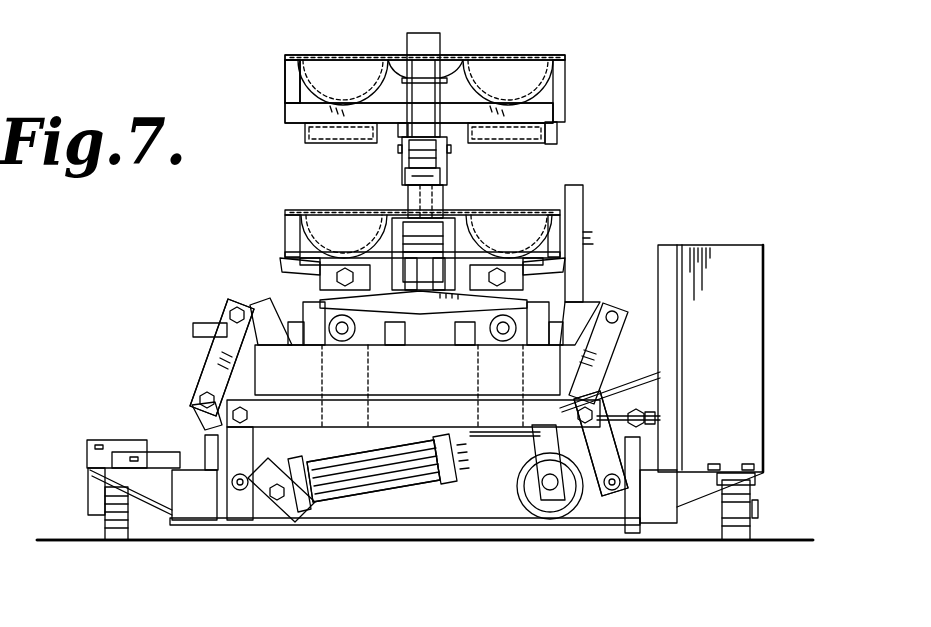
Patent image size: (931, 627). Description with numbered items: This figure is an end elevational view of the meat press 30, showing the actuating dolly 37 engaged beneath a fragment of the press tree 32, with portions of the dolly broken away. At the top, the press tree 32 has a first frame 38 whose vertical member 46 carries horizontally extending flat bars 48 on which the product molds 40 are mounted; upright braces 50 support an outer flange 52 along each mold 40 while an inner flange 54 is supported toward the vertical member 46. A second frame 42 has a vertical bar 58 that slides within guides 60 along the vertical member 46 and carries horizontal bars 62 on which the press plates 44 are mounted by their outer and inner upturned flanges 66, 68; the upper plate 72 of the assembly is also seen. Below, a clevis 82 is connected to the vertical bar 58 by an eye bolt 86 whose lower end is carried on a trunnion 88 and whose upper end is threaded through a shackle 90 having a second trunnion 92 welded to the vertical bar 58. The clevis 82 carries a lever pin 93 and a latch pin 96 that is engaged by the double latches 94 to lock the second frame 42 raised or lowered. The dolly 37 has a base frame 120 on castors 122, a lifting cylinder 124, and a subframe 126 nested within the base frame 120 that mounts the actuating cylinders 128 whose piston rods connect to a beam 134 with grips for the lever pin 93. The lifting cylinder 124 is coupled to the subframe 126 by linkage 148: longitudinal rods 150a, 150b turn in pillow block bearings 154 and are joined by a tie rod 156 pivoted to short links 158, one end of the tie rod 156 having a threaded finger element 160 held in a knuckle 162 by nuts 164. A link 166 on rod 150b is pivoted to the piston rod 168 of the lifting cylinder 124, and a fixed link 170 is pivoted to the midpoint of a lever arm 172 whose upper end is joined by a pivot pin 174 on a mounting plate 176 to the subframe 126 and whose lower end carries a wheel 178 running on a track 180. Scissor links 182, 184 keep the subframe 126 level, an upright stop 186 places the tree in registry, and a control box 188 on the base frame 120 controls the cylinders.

The meat press 30 is at (678, 122).
The press tree 32 is at (572, 60).
The actuating dolly 37 is at (148, 324).
The first frame 38 is at (440, 45).
The product mold 40 is at (480, 88).
The second frame 42 is at (424, 32).
The press plate 44 is at (303, 143).
The vertical member 46 is at (407, 45).
The flat bar 48 is at (285, 113).
The upright brace 50 is at (287, 82).
The outer flange 52 is at (287, 55).
The inner flange 54 is at (396, 56).
The vertical bar 58 is at (440, 56).
The guide 60 is at (378, 88).
The horizontal bar 62 is at (545, 113).
The outer upturned flange 66 is at (306, 133).
The inner upturned flange 68 is at (380, 135).
The top plate 72 is at (519, 56).
The clevis 82 is at (372, 240).
The eye bolt 86 is at (410, 194).
The trunnion 88 is at (443, 218).
The shackle 90 is at (447, 175).
The second trunnion 92 is at (447, 150).
The lever pin 93 is at (425, 318).
The double latch 94 is at (478, 240).
The latch pin 96 is at (523, 300).
The base frame 120 is at (190, 462).
The castor 122 is at (105, 533).
The lifting cylinder 124 is at (400, 494).
The subframe 126 is at (397, 386).
The actuating cylinder 128 is at (320, 348).
The beam 134 is at (332, 300).
The linkage 148 is at (204, 362).
The longitudinal rod 150a is at (257, 524).
The longitudinal rod 150b is at (612, 522).
The pillow block bearing 154 is at (227, 522).
The tie rod 156 is at (400, 440).
The short link 158 is at (690, 440).
The finger element 160 is at (588, 406).
The knuckle 162 is at (656, 420).
The nut 164 is at (656, 408).
The link 166 is at (660, 376).
The piston rod 168 is at (610, 386).
The fixed link 170 is at (612, 418).
The lever arm 172 is at (620, 318).
The pivot pin 174 is at (602, 305).
The mounting plate 176 is at (250, 305).
The wheel 178 is at (520, 490).
The track 180 is at (452, 525).
The scissor link 182 is at (215, 414).
The scissor link 184 is at (206, 378).
The upright stop 186 is at (583, 192).
The control box 188 is at (766, 247).